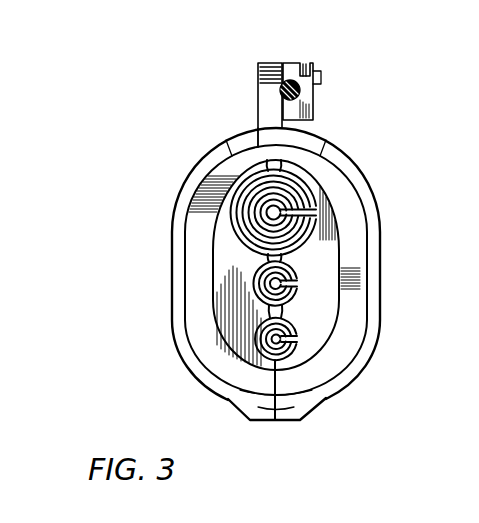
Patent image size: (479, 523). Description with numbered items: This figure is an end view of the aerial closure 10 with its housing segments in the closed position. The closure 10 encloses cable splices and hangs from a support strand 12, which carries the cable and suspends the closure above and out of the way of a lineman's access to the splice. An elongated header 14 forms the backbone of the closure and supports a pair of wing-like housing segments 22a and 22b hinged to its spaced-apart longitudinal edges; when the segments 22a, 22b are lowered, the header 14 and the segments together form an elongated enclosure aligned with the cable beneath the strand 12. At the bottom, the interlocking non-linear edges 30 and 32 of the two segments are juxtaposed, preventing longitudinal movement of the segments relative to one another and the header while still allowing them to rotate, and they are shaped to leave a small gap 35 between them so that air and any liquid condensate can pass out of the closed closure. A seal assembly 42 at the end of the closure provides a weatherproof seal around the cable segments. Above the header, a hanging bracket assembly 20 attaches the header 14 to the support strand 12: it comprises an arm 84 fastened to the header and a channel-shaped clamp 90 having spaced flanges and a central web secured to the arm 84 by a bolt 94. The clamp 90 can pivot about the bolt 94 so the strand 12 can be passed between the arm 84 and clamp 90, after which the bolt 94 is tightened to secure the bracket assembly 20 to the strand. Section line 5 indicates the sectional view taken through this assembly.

The section line 5- 5 is at (274, 62).
The aerial closure 10 is at (181, 361).
The support strand 12 is at (314, 97).
The elongated header 14 is at (258, 134).
The hanging bracket assembly 20 is at (312, 58).
The housing segment 22a is at (182, 262).
The housing segment 22b is at (372, 258).
The non-linear edge 30 is at (240, 418).
The non-linear edge 32 is at (286, 393).
The gap 35 is at (277, 422).
The seal assembly 42 is at (343, 225).
The arm 84 is at (257, 75).
The clamp 90 is at (315, 110).
The bolt 94 is at (322, 74).